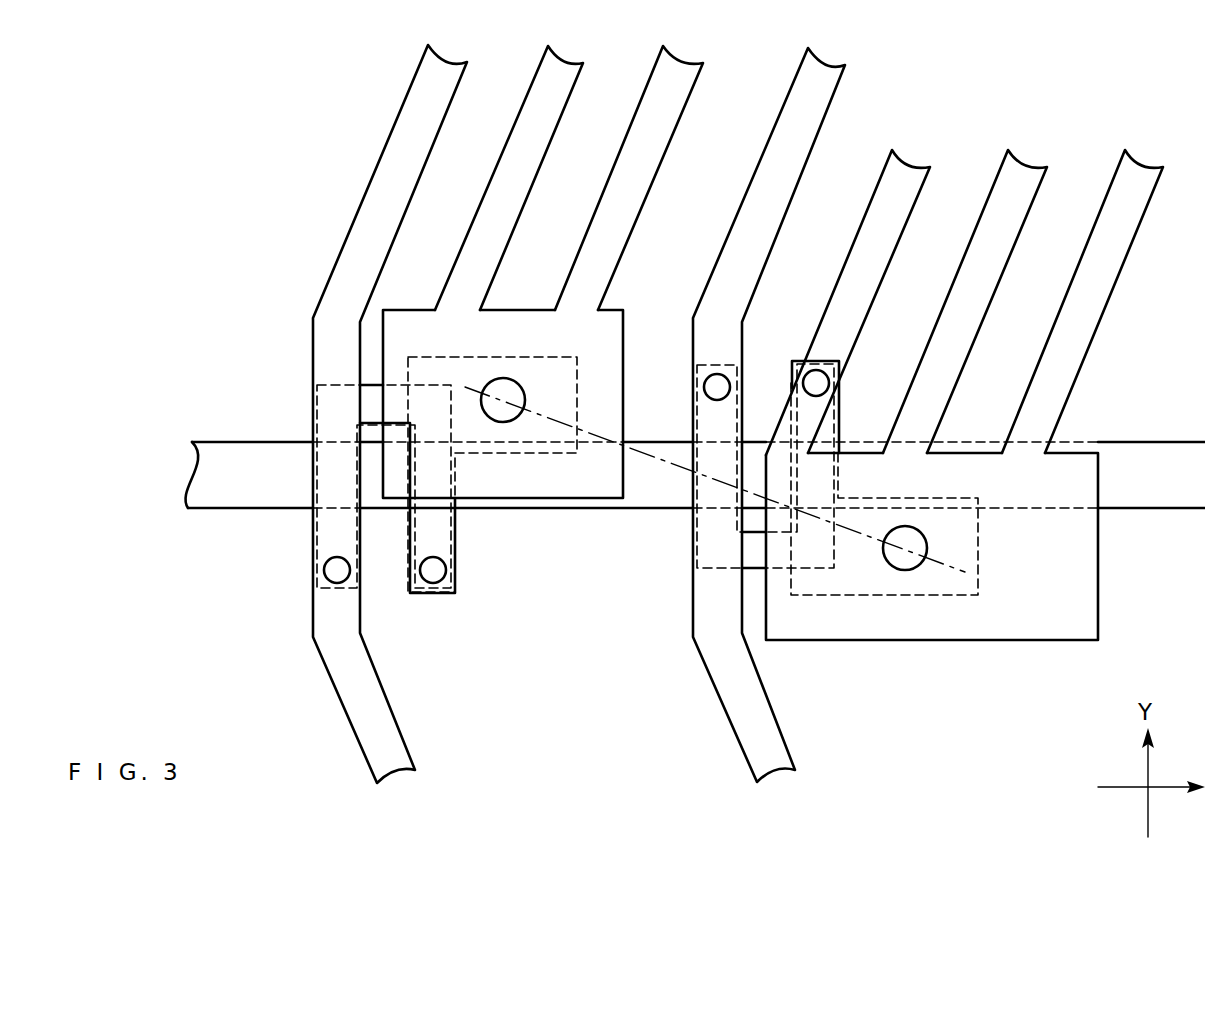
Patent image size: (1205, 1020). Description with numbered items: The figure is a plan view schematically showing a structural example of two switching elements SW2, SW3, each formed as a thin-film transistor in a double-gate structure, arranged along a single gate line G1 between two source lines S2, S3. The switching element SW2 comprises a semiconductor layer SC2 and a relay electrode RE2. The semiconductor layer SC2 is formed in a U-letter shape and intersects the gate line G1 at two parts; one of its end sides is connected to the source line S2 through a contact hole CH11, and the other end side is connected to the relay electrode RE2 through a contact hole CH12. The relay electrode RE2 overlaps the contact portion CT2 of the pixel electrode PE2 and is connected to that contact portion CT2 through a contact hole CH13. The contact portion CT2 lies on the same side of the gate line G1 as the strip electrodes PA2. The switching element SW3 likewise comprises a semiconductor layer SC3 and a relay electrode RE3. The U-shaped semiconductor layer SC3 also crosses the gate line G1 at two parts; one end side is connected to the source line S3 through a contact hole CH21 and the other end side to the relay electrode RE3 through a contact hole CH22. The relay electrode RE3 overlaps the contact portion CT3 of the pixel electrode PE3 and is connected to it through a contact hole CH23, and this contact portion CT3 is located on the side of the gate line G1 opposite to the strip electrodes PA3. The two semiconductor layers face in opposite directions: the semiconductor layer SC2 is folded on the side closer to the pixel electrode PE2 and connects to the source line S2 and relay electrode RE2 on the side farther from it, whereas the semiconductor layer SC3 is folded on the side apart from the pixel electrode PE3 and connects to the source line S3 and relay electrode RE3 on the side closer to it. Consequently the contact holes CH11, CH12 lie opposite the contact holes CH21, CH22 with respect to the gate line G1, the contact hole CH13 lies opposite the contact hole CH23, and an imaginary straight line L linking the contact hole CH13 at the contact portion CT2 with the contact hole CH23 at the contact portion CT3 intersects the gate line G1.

The gate line G1 is at (200, 478).
The source line S2 is at (397, 762).
The source line S3 is at (777, 765).
The pixel electrode PE2 is at (641, 160).
The strip electrodes PA2 is at (627, 133).
The contact portion CT2 is at (528, 310).
The pixel electrode PE3 is at (1101, 265).
The strip electrodes PA3 is at (1150, 167).
The contact portion CT3 is at (1100, 582).
The switching element SW2 is at (376, 379).
The semiconductor layer SC2 is at (317, 410).
The relay electrode RE2 is at (565, 453).
The contact hole CH11 is at (333, 586).
The contact hole CH12 is at (433, 585).
The contact hole CH13 is at (506, 422).
The imaginary straight line L is at (478, 385).
The contact hole CH21 is at (716, 372).
The contact hole CH22 is at (813, 369).
The contact hole CH23 is at (905, 571).
The semiconductor layer SC3 is at (712, 572).
The switching element SW3 is at (753, 582).
The relay electrode RE3 is at (967, 598).